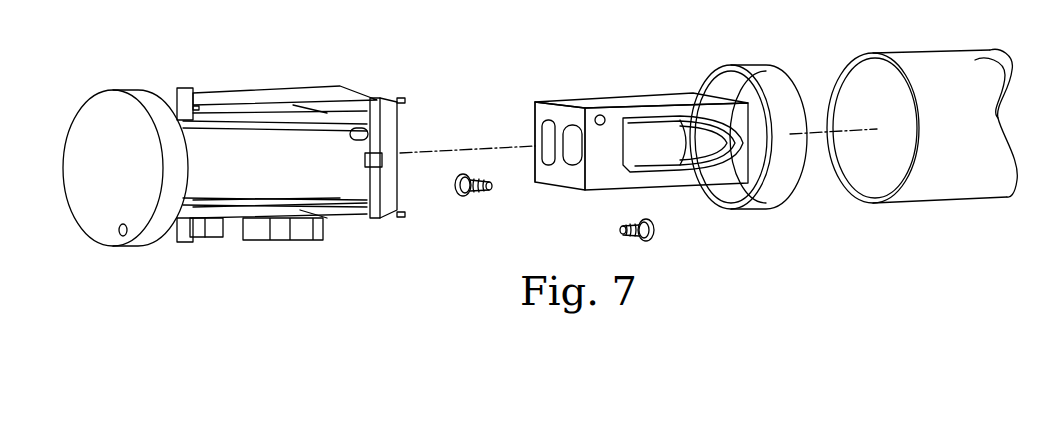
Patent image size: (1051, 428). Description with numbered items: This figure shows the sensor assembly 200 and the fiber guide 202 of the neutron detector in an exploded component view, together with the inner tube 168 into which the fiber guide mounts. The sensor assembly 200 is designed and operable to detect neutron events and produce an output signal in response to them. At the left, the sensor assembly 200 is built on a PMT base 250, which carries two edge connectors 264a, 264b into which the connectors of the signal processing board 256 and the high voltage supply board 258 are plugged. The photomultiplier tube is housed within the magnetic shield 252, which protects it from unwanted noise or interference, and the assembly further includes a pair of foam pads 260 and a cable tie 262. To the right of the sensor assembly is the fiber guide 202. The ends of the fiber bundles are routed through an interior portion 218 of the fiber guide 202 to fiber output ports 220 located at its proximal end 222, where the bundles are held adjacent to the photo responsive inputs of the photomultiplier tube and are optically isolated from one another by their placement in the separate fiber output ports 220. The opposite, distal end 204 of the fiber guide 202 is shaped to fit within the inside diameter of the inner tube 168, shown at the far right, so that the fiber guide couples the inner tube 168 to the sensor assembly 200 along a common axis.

The inner tube 168 is at (932, 56).
The sensor assembly 200 is at (264, 69).
The fiber guide 202 is at (636, 76).
The distal end 204 is at (785, 202).
The interior portion 218 is at (654, 147).
The fiber output ports 220 is at (543, 133).
The proximal end 222 is at (544, 113).
The PMT base 250 is at (92, 116).
The magnetic shield 252 is at (240, 187).
The signal processing board 256 is at (297, 97).
The high voltage supply board 258 is at (310, 217).
The foam pads 260 is at (402, 100).
The cable tie 262 is at (382, 138).
The edge connector 264a is at (178, 97).
The edge connector 264b is at (178, 236).